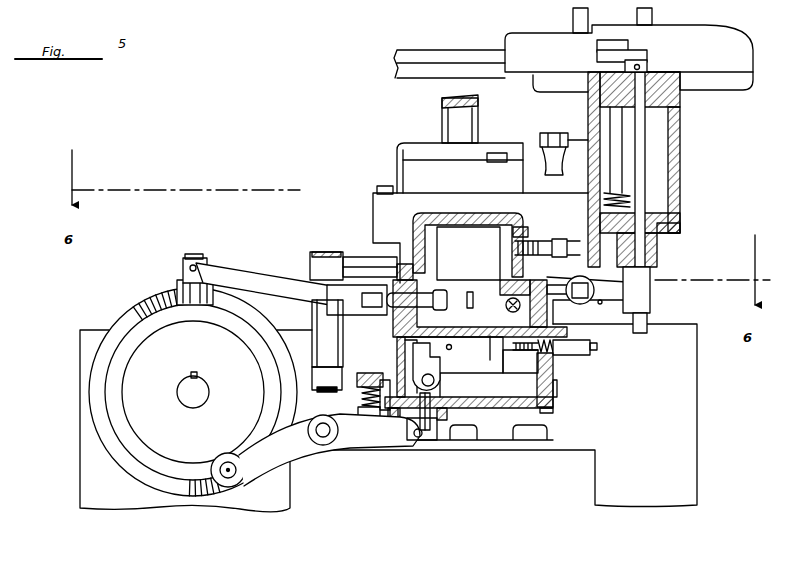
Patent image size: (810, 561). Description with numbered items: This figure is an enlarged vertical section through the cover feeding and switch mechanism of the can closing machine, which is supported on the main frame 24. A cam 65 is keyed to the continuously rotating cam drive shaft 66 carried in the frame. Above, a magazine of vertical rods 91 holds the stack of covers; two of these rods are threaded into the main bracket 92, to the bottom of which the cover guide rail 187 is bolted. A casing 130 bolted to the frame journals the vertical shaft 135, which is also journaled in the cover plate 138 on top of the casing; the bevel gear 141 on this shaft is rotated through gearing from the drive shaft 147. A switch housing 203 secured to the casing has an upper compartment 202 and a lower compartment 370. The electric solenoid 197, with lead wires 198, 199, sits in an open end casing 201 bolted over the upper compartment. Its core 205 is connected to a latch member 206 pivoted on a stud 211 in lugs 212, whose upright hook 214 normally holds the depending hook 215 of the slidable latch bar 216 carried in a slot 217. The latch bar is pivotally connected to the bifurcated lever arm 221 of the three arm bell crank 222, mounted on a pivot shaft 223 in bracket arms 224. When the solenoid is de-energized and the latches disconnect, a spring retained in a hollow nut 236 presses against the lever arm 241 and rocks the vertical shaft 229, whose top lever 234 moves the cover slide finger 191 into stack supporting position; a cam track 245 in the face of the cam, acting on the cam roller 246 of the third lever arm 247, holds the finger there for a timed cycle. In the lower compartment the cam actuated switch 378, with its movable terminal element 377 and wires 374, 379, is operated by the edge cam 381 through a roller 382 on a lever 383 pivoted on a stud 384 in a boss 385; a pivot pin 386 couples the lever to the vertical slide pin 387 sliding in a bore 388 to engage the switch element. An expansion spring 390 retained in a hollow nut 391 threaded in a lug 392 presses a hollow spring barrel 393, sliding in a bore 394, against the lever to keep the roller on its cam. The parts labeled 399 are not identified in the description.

The main frame 24 is at (690, 376).
The cam 65 is at (112, 320).
The cam drive shaft 66 is at (186, 386).
The vertical rods 91 is at (572, 14).
The main bracket 92 is at (710, 32).
The casing 130 is at (374, 206).
The vertical shaft 135 is at (600, 122).
The cover plate 138 is at (410, 152).
The bevel gear 141 is at (605, 199).
The drive shaft 147 is at (472, 128).
The cover guide rail 187 is at (425, 46).
The cover slide finger 191 is at (608, 42).
The electric solenoid 197 is at (498, 244).
The lead wire 198 is at (560, 244).
The lead wire 199 is at (568, 249).
The open end casing 201 is at (463, 214).
The upper compartment 202 is at (450, 367).
The switch housing 203 is at (560, 390).
The core 205 is at (470, 293).
The latch member 206 is at (499, 306).
The stud 211 is at (504, 348).
The lugs 212 is at (560, 296).
The upright hook 214 is at (463, 349).
The depending hook 215 is at (416, 298).
The slidable latch bar 216 is at (468, 253).
The slot 217 is at (402, 266).
The lever arm 221 is at (357, 300).
The three arm bell crank 222 is at (318, 318).
The pivot shaft 223 is at (322, 255).
The bracket arms 224 is at (362, 262).
The vertical shaft 229 is at (648, 160).
The lever 234 is at (650, 54).
The hollow nut 236 is at (584, 296).
The lever arm 241 is at (587, 300).
The cam track 245 is at (128, 311).
The cam roller 246 is at (180, 284).
The third lever arm 247 is at (264, 280).
The lower compartment 370 is at (556, 368).
The wire 374 is at (600, 348).
The movable terminal element 377 is at (437, 368).
The cam actuated switch 378 is at (520, 372).
The wire 379 is at (605, 350).
The edge cam 381 is at (147, 452).
The roller 382 is at (226, 492).
The lever 383 is at (329, 450).
The pivot stud 384 is at (323, 445).
The boss 385 is at (348, 418).
The pivot pin 386 is at (418, 438).
The vertical slide pin 387 is at (435, 400).
The bore 388 is at (445, 410).
The expansion spring 390 is at (368, 372).
The hollow nut 391 is at (386, 380).
The lug 392 is at (358, 393).
The hollow spring barrel 393 is at (394, 421).
The bore 394 is at (368, 420).
The bolts 399 is at (492, 412).